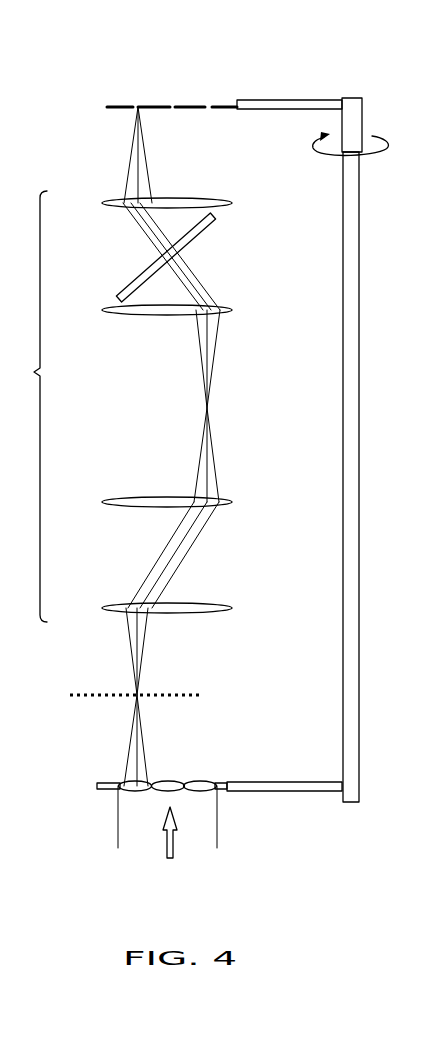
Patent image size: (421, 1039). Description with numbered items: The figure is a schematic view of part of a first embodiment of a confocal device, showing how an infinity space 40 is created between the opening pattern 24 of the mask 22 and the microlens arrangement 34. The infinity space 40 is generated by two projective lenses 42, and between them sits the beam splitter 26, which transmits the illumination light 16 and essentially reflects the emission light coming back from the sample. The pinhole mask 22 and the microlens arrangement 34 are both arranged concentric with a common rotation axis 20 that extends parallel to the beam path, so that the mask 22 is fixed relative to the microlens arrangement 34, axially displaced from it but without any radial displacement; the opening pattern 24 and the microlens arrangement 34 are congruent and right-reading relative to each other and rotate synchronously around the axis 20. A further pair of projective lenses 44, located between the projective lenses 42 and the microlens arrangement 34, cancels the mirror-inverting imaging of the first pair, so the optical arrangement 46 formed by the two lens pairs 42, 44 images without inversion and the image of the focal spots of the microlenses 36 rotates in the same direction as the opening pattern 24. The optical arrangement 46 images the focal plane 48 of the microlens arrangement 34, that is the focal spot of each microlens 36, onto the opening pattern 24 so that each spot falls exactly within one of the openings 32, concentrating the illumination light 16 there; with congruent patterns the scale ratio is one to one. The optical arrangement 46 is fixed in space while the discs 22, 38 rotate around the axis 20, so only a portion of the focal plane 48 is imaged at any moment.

The illumination light 16 is at (170, 849).
The common rotation axis 20 is at (350, 123).
The mask 22 is at (272, 95).
The opening pattern 24 is at (122, 101).
The beam splitter 26 is at (200, 230).
The openings 32 is at (140, 104).
The microlens arrangement 34 is at (185, 775).
The microlens 36 is at (198, 788).
The disc 38 is at (290, 800).
The infinity space 40 is at (212, 267).
The projective lenses 42 is at (198, 202).
The further pair of projective lenses 44 is at (137, 501).
The optical arrangement 46 is at (26, 406).
The focal plane 48 is at (167, 693).